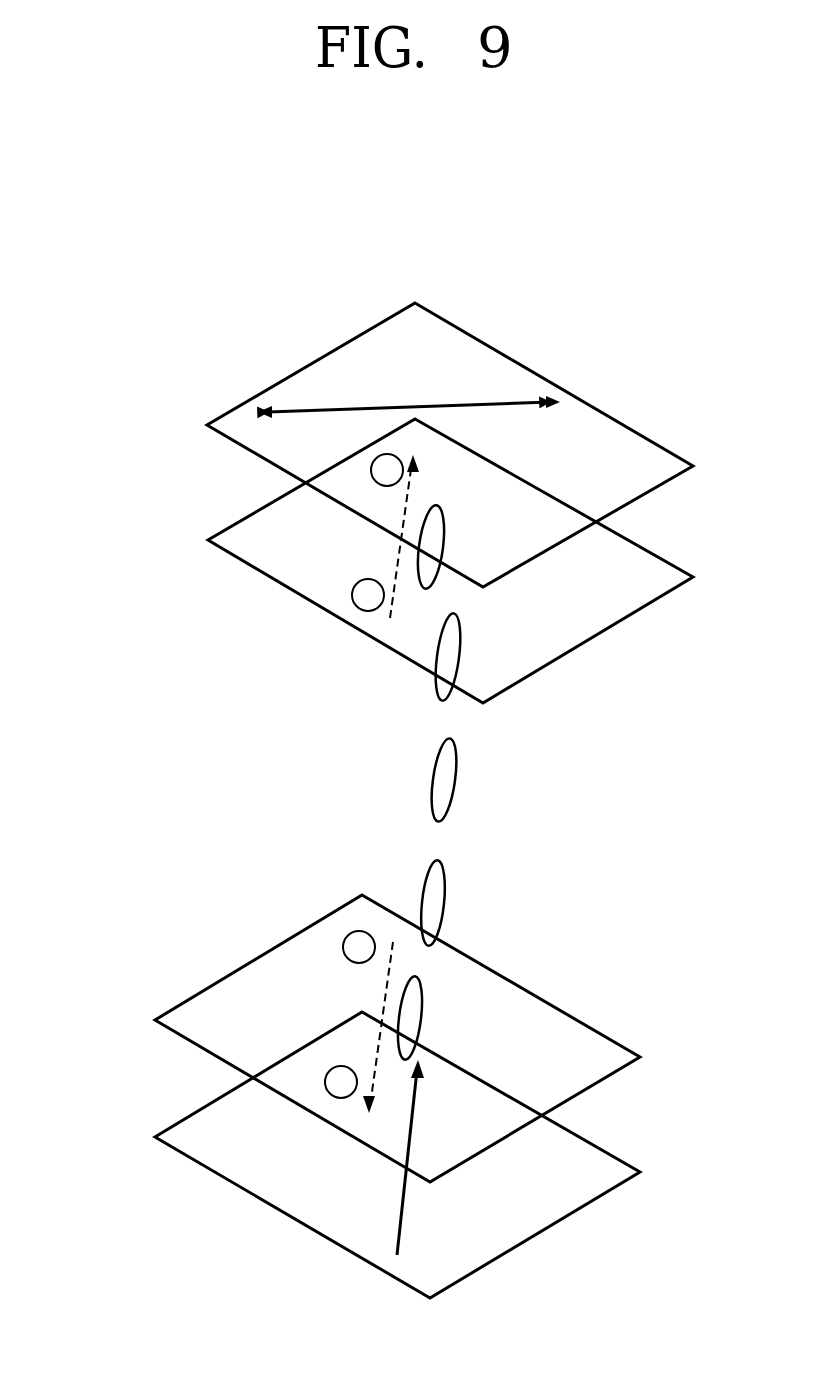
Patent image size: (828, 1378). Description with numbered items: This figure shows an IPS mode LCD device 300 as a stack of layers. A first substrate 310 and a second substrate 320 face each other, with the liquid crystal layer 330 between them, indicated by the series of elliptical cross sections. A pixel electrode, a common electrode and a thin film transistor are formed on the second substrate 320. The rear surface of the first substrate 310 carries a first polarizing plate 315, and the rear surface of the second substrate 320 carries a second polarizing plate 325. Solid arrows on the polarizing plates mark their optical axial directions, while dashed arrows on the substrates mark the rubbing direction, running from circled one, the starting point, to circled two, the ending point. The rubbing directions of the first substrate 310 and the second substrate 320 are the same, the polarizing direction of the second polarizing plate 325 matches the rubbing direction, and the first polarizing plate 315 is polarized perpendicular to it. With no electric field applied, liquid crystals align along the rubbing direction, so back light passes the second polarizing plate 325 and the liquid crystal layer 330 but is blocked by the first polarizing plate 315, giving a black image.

The IPS mode LCD device 300 is at (166, 353).
The first substrate 310 is at (648, 563).
The first polarizing plate 315 is at (538, 390).
The second substrate 320 is at (595, 1045).
The second polarizing plate 325 is at (595, 1158).
The liquid crystal layer 330 is at (448, 778).